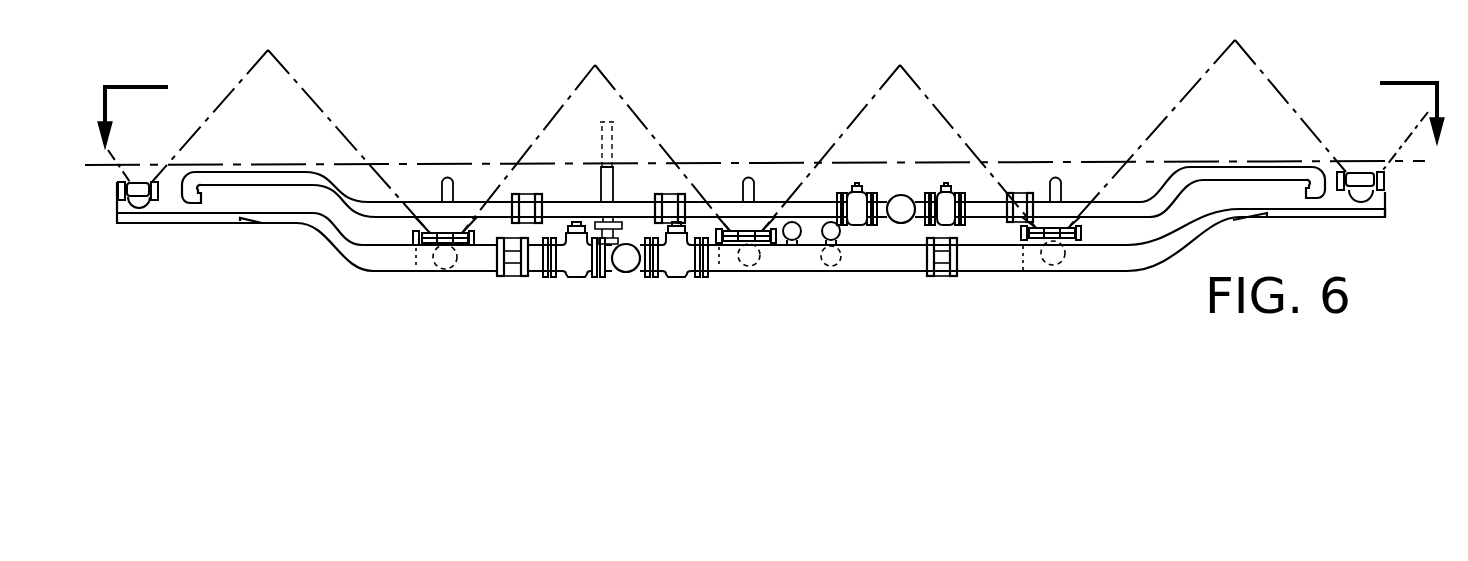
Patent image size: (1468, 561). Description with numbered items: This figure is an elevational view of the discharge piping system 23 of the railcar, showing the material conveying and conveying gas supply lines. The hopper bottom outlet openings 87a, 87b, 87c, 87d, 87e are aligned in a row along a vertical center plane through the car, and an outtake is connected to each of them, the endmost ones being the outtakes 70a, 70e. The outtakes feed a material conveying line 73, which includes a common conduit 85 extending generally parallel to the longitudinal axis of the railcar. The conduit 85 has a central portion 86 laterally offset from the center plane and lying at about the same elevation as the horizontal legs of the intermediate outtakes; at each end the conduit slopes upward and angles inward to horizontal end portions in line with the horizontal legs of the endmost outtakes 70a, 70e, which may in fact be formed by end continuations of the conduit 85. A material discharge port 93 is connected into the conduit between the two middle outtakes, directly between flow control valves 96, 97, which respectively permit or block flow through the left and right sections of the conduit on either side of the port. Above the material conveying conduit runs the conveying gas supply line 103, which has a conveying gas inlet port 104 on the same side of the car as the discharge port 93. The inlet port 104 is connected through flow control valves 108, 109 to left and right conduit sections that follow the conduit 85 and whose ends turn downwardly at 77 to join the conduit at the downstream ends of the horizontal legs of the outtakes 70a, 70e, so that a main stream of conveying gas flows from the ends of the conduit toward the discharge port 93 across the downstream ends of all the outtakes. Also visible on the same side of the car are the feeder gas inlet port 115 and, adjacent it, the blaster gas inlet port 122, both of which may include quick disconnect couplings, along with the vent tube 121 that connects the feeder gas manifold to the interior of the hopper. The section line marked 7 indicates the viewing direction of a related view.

The section line 7- 7 is at (764, 138).
The discharge piping system 23 is at (296, 255).
The outtake 70a is at (140, 232).
The outtake 70e is at (1374, 228).
The material conveying line 73 is at (369, 282).
The downward turn of the conduit sections 77 is at (200, 162).
The common conduit 85 is at (1121, 283).
The central portion 86 is at (780, 264).
The hopper bottom outlet opening 87a is at (138, 182).
The hopper bottom outlet opening 87b is at (452, 233).
The hopper bottom outlet opening 87c is at (749, 231).
The hopper bottom outlet opening 87d is at (1058, 227).
The hopper bottom outlet opening 87e is at (1378, 172).
The material discharge port 93 is at (627, 273).
The flow control valve 96 is at (575, 279).
The flow control valve 97 is at (674, 279).
The conveying gas supply line 103 is at (360, 184).
The conveying gas inlet port 104 is at (897, 223).
The flow control valve 108 is at (853, 188).
The flow control valve 109 is at (945, 188).
The feeder gas inlet port 115 is at (837, 241).
The vent tube 121 is at (614, 183).
The blaster gas inlet port 122 is at (786, 246).